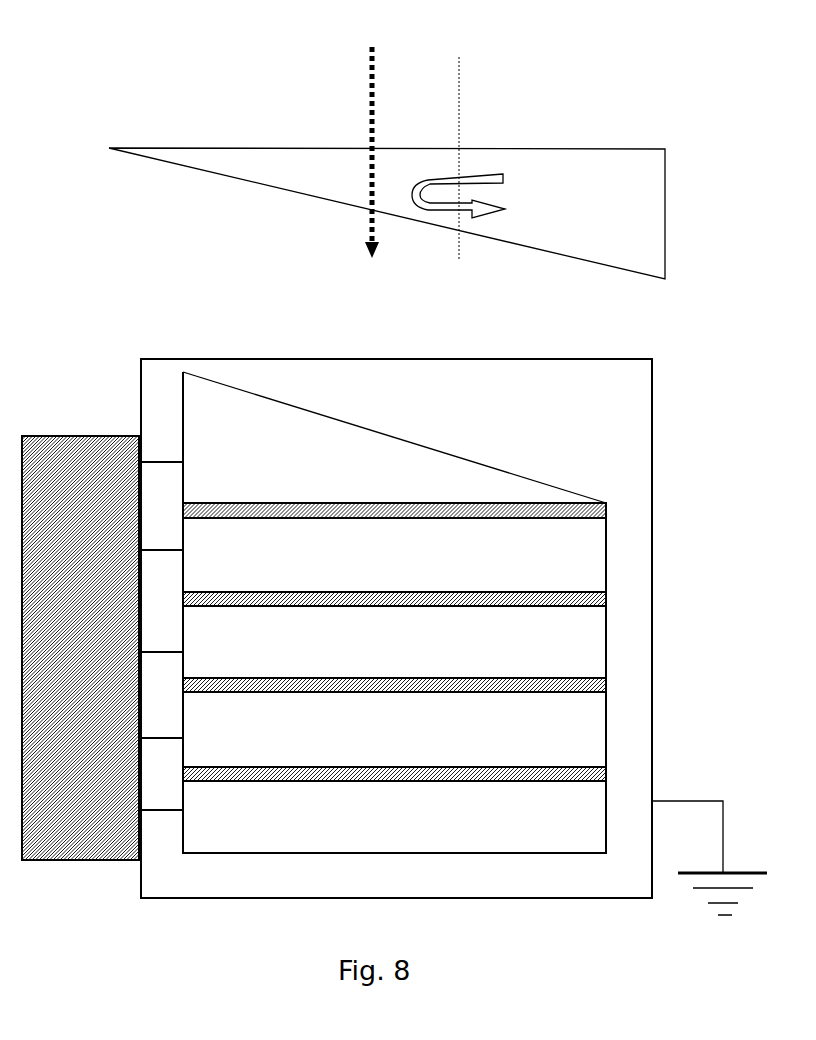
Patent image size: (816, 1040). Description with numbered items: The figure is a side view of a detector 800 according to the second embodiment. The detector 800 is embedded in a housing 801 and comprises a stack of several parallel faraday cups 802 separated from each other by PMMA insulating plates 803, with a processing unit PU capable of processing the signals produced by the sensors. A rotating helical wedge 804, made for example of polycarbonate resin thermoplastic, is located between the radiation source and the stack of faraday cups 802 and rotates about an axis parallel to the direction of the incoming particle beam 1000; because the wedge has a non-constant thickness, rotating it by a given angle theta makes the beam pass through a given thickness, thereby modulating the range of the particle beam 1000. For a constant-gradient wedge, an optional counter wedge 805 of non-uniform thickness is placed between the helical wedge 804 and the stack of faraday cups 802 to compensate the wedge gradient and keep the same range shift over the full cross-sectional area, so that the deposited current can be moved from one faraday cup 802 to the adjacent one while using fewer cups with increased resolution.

The detector 800 is at (180, 86).
The particle beam 1000 is at (368, 60).
The rotating helical wedge 804 is at (599, 150).
The housing 801 is at (459, 358).
The counter wedge 805 is at (182, 387).
The PMMA insulating plates 803 is at (606, 768).
The faraday cups 802 is at (493, 549).
The processing unit PU is at (112, 857).